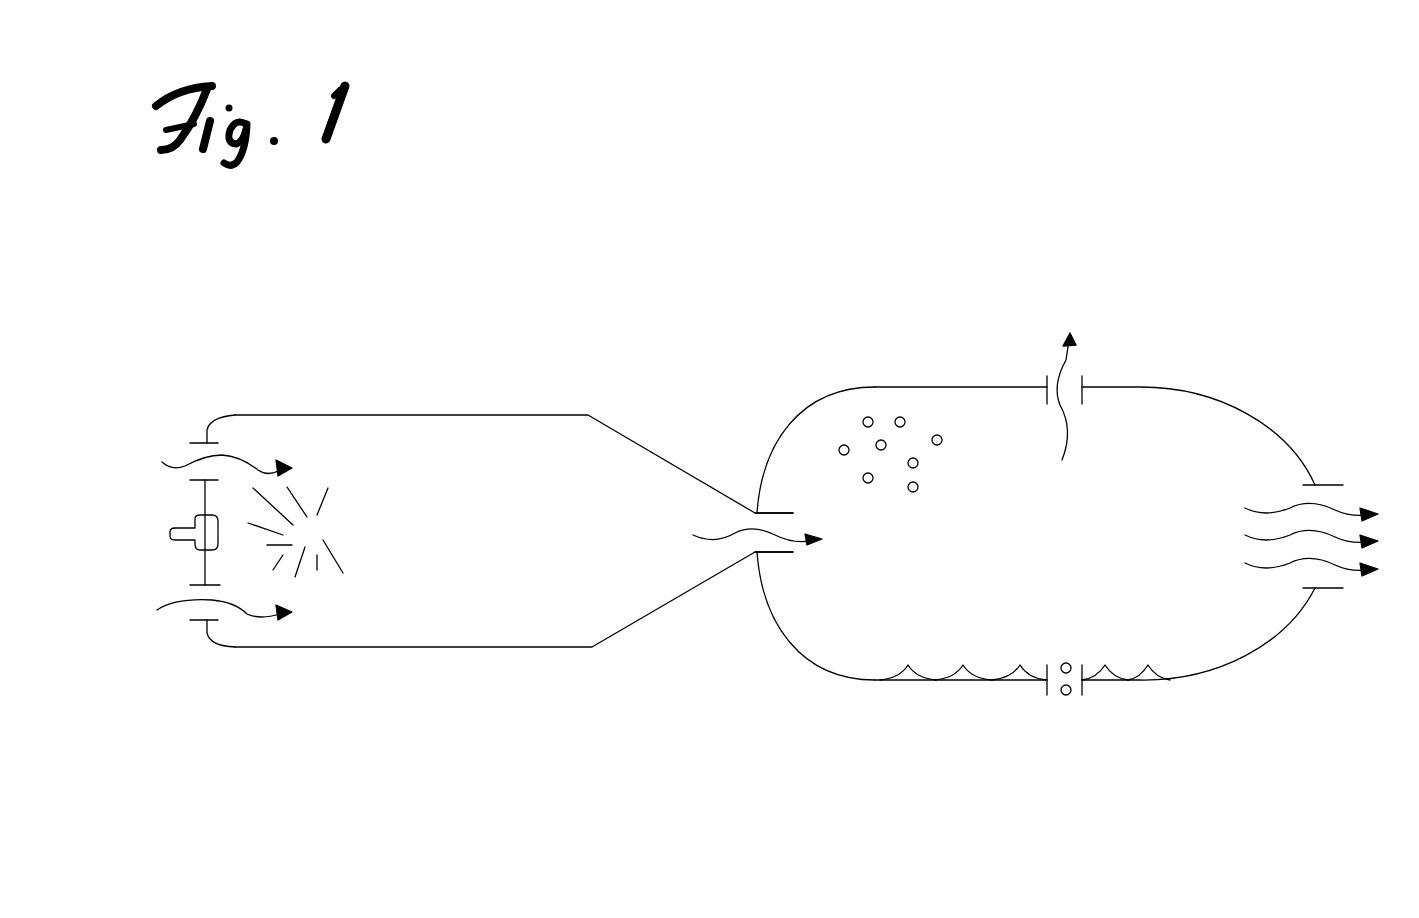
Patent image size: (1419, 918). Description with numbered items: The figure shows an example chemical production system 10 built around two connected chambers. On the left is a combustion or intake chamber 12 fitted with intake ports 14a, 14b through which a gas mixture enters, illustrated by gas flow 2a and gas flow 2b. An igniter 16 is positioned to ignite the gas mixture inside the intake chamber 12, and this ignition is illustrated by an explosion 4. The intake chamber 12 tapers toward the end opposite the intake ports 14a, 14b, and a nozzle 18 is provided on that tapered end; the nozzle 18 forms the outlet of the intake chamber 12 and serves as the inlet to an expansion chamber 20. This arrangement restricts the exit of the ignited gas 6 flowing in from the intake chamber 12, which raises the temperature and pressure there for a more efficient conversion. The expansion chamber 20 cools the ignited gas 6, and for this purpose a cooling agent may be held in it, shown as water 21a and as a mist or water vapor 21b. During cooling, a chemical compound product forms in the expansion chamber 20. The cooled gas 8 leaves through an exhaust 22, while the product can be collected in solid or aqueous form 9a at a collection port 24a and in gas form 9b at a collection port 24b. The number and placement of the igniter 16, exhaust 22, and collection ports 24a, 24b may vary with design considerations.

The gas flow 2a is at (261, 470).
The gas flow 2b is at (254, 617).
The explosion 4 is at (327, 527).
The ignited gas 6 is at (788, 541).
The cooled gas 8 is at (1265, 537).
The chemical compound product in solid or aqueous form 9a is at (1078, 708).
The chemical compound product in gas form 9b is at (1058, 359).
The chemical production system 10 is at (1103, 316).
The intake chamber 12 is at (383, 415).
The intake port 14a is at (201, 441).
The intake port 14b is at (208, 623).
The igniter 16 is at (219, 532).
The nozzle 18 is at (785, 553).
The expansion chamber 20 is at (838, 403).
The water 21a is at (955, 660).
The water vapor 21b is at (950, 470).
The exhaust 22 is at (1323, 485).
The collection port 24a is at (1083, 665).
The collection port 24b is at (1083, 376).